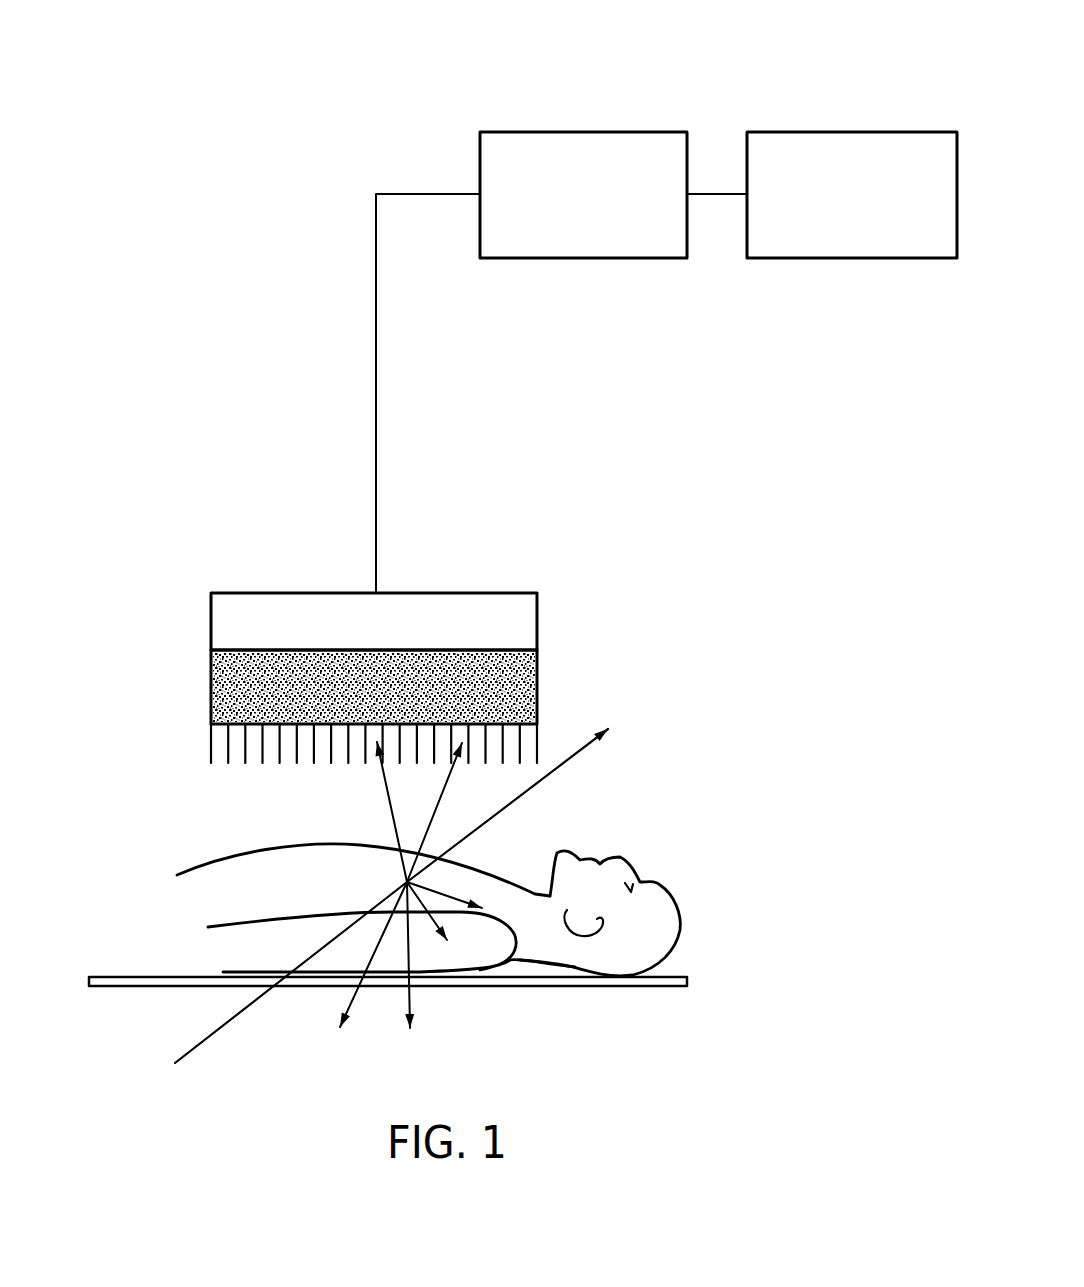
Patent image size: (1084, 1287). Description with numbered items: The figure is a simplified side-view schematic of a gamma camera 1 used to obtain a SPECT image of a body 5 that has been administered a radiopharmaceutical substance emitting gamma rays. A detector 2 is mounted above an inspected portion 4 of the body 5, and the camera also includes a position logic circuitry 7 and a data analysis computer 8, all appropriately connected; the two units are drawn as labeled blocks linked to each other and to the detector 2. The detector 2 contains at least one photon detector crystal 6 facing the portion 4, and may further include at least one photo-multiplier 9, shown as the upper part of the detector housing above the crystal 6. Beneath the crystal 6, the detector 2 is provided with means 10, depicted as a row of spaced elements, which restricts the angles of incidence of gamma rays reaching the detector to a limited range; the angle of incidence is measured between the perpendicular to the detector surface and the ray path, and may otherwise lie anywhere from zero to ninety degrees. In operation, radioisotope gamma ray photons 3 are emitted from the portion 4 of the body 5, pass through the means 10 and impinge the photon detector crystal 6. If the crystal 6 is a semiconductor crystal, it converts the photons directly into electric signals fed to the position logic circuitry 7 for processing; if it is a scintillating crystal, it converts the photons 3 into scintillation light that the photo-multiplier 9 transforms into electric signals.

The gamma camera 1 is at (655, 532).
The detector 2 is at (211, 630).
The radioisotope gamma ray photons 3 is at (440, 793).
The inspected portion 4 is at (473, 858).
The body 5 is at (792, 825).
The photon detector crystal 6 is at (537, 677).
The position logic circuitry 7 is at (480, 167).
The data analysis computer 8 is at (847, 131).
The photo-multiplier 9 is at (537, 618).
The means establishing angles of incidence 10 is at (537, 741).